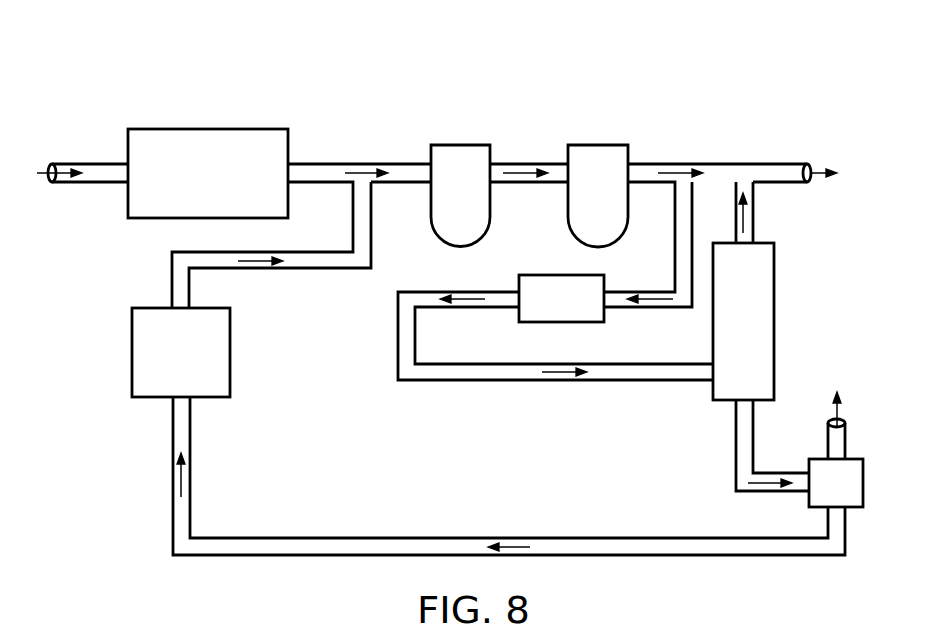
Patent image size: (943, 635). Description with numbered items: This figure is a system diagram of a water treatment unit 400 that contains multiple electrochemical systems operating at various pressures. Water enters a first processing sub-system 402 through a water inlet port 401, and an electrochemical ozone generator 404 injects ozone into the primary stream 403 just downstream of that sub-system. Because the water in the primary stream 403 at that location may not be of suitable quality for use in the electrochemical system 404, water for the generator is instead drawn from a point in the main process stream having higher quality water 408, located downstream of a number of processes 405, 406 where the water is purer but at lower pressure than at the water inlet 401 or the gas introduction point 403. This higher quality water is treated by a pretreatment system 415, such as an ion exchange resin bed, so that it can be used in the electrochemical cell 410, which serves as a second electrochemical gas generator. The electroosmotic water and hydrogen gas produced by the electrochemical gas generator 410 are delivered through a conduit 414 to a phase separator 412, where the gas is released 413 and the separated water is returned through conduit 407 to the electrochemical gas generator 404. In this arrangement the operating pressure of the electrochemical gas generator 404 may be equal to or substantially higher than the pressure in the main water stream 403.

The water treatment unit 400 is at (658, 65).
The water inlet port 401 is at (77, 165).
The first processing sub-system 402 is at (209, 129).
The primary stream 403 is at (350, 163).
The electrochemical ozone generator 404 is at (230, 357).
The process 405 is at (462, 143).
The process 406 is at (600, 142).
The conduit 407 is at (298, 537).
The higher quality water point 408 is at (717, 163).
The electrochemical cell 410 is at (775, 290).
The phase separator 412 is at (808, 507).
The gas release 413 is at (827, 430).
The conduit 414 is at (736, 445).
The pretreatment system 415 is at (574, 323).